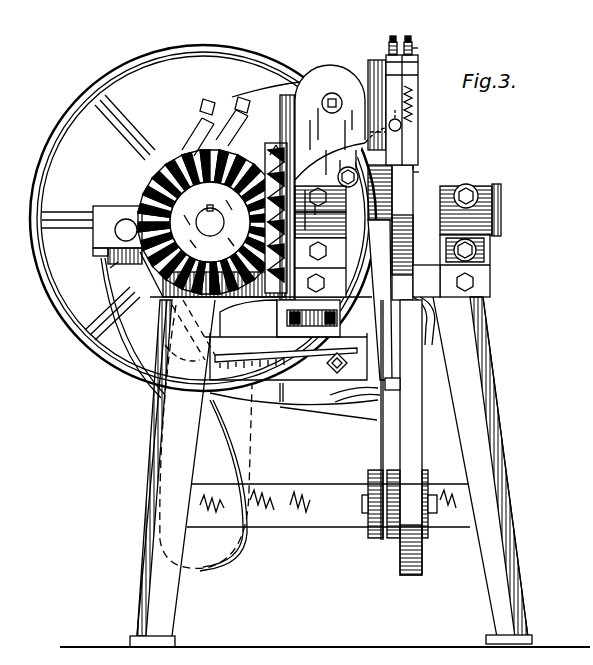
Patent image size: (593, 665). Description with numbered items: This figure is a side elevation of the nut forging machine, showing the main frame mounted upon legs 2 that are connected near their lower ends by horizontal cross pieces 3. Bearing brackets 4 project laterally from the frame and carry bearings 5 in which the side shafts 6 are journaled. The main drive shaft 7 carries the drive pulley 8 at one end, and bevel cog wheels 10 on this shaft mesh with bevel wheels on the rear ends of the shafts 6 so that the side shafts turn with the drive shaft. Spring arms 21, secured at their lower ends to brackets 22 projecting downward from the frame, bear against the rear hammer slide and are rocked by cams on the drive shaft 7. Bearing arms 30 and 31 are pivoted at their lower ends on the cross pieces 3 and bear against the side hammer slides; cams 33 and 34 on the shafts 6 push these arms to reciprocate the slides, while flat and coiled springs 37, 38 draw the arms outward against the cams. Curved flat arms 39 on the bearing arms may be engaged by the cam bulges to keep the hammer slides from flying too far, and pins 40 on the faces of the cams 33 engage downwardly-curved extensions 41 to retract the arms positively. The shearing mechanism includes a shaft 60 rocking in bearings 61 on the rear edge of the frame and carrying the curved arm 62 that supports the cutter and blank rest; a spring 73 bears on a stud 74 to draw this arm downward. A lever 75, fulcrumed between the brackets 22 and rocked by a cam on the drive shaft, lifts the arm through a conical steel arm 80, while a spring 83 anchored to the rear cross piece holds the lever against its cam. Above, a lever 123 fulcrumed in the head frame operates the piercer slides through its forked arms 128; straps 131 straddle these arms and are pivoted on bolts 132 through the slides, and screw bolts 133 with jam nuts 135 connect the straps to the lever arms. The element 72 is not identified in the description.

The legs 2 is at (331, 472).
The horizontal cross pieces 3 is at (328, 504).
The bearing brackets 4 is at (330, 280).
The bearings 5 is at (393, 211).
The shafts 6 is at (496, 213).
The main or drive shaft 7 is at (200, 220).
The drive pulley 8 is at (50, 276).
The bevel cog wheels 10 is at (184, 172).
The spring arms 21 is at (273, 312).
The brackets 22 is at (308, 318).
The bearing arms 30 is at (418, 296).
The bearing arms 31 is at (380, 380).
The cams 33 is at (414, 190).
The cams 34 is at (330, 197).
The flat springs 37 is at (411, 437).
The coiled springs 38 is at (432, 330).
The flat arms 39 is at (402, 232).
The pins 40 is at (348, 167).
The extensions 41 is at (418, 166).
The shaft 60 is at (129, 264).
The bearings 61 is at (118, 210).
The arm 62 is at (110, 268).
The spring 72 is at (413, 112).
The spring 73 is at (286, 356).
The stud 74 is at (327, 363).
The lever 75 is at (328, 402).
The conical steel arm 80 is at (393, 384).
The spring 83 is at (240, 428).
The lever 123 is at (290, 100).
The forked arms 128 is at (382, 63).
The straps 131 is at (403, 75).
The bolts 132 is at (412, 126).
The screw bolts 133 is at (408, 36).
The jam nuts 135 is at (418, 53).